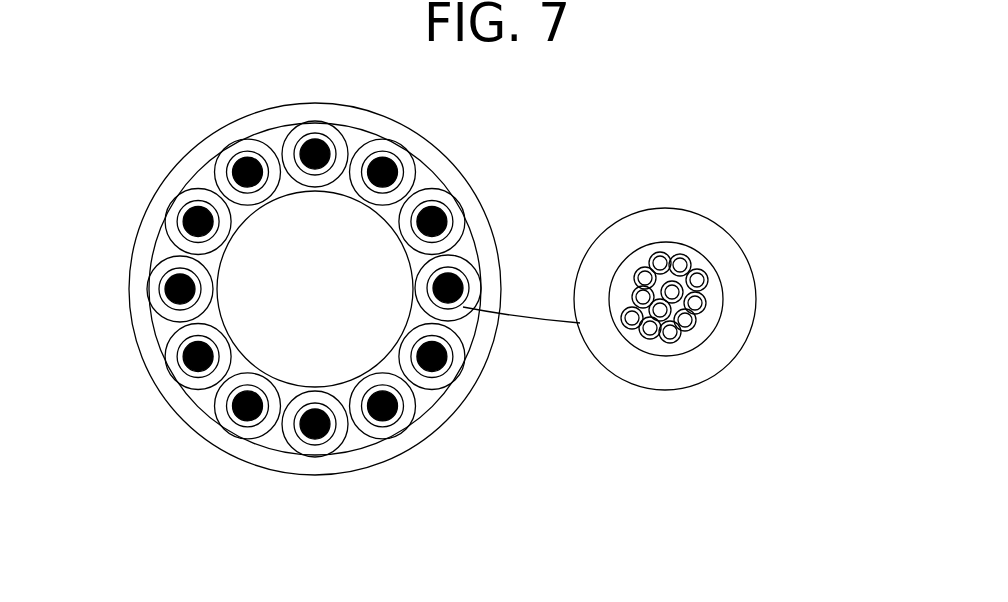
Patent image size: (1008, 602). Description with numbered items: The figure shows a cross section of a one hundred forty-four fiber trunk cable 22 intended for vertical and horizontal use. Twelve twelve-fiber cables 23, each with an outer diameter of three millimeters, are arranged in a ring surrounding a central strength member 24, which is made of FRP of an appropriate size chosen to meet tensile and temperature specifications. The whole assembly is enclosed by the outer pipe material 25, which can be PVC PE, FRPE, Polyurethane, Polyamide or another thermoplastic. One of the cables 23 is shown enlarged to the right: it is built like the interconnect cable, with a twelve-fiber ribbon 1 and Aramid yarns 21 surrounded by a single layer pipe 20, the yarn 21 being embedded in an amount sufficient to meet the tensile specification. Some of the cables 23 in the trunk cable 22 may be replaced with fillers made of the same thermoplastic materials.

The cable 22 is at (286, 288).
The outer pipe material 25 is at (131, 258).
The central strength member 24 is at (257, 325).
The 12 fiber cable 23 is at (723, 239).
The pipe 20 is at (702, 232).
The Aramid yarns 21 is at (704, 300).
The 12 fiber ribbon 1 is at (685, 320).